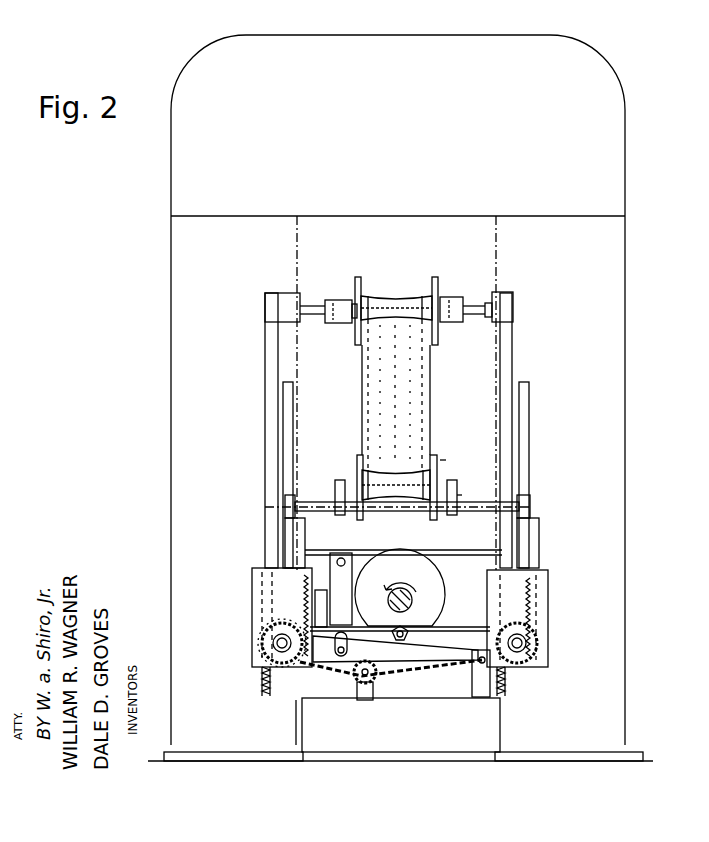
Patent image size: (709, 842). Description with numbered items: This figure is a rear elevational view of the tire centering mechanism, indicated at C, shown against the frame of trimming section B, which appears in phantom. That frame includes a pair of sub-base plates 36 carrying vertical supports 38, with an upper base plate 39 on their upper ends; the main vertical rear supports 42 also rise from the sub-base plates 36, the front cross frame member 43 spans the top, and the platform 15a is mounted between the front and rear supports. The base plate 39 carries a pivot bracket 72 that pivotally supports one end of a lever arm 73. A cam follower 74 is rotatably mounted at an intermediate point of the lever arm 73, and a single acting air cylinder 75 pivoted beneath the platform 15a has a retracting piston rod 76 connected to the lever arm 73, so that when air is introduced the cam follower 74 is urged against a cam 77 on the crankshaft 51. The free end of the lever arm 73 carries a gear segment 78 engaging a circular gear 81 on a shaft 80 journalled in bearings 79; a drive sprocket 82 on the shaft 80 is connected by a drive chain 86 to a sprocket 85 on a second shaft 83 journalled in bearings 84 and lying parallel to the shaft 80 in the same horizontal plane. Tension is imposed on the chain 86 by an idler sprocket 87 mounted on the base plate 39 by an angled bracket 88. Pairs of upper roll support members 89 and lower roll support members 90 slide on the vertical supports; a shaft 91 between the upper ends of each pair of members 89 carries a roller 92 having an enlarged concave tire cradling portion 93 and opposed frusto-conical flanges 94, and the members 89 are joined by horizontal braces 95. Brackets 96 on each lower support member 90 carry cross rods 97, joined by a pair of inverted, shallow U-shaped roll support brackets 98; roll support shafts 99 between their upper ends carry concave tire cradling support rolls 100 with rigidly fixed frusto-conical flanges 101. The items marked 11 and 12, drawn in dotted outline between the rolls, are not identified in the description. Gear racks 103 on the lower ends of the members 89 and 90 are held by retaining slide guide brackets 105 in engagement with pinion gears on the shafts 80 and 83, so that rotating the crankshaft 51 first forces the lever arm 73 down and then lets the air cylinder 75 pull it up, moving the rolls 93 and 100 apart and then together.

The trimming section B is at (641, 119).
The strip feeding mechanism C is at (557, 470).
The front cross frame member 43 is at (412, 132).
The main vertical rear supports 42 is at (222, 352).
The upper roll support members 89 is at (268, 358).
The lower roll support members 90 is at (287, 398).
The horizontal braces 95 is at (300, 305).
The frusto-conical flanges 94 is at (357, 290).
The roller 92 is at (336, 304).
The concave tire cradling portion 93 is at (366, 296).
The shaft 91 is at (462, 302).
The strip 12 is at (365, 375).
The strip 11 is at (425, 378).
The concave tire cradling support rolls 100 is at (375, 478).
The frusto-conical flanges 101 is at (358, 467).
The roll support shafts 99 is at (437, 476).
The cross rods 97 is at (486, 502).
The roll support brackets 98 is at (337, 497).
The brackets 96 is at (288, 495).
The platform 15a is at (420, 552).
The gear racks 103 is at (256, 570).
The retaining slide guide brackets 105 is at (252, 586).
The bearings 79 is at (262, 636).
The shaft 80 is at (273, 643).
The drive sprocket 82 is at (262, 618).
The circular gear 81 is at (270, 690).
The bearings 84 is at (530, 640).
The second shaft 83 is at (527, 643).
The sprocket 85 is at (508, 680).
The gear segment 78 is at (320, 590).
The single acting air cylinder 75 is at (340, 560).
The cam 77 is at (430, 580).
The crankshaft 51 is at (412, 600).
The cam follower 74 is at (430, 630).
The retracting piston rod 76 is at (343, 634).
The drive chain 86 is at (448, 700).
The lever arm 73 is at (424, 665).
The idler sprocket 87 is at (356, 680).
The angled bracket 88 is at (363, 700).
The upper base plate 39 is at (400, 700).
The pivot bracket 72 is at (480, 698).
The vertical supports 38 is at (497, 735).
The sub-base plates 36 is at (308, 756).